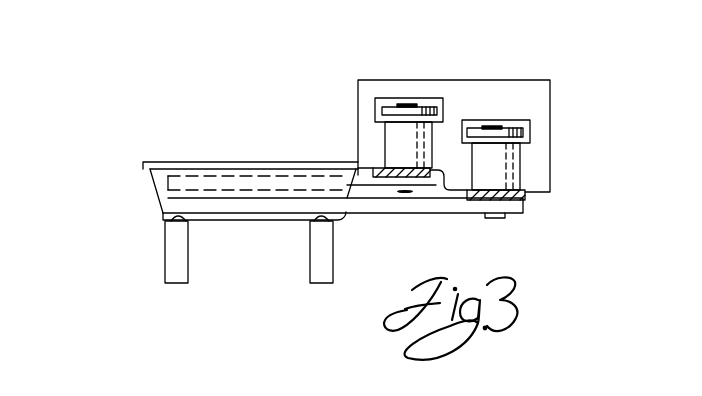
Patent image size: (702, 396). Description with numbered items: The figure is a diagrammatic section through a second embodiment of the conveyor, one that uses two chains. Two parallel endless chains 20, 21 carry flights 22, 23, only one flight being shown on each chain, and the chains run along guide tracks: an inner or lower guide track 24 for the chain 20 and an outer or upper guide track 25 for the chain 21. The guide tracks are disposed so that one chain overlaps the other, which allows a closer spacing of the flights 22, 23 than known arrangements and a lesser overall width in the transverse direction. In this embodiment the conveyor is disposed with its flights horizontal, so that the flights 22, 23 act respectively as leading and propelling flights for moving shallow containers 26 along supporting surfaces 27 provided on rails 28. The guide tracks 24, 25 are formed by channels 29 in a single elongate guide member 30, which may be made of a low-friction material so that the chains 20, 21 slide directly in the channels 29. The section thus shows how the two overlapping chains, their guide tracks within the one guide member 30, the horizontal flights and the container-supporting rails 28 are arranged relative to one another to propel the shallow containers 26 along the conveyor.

The endless chain 20 is at (512, 180).
The endless chain 21 is at (393, 140).
The flight 22 is at (182, 208).
The flight 23 is at (188, 178).
The inner guide track 24 is at (532, 103).
The outer guide track 25 is at (430, 88).
The shallow container 26 is at (153, 188).
The supporting surface 27 is at (178, 222).
The rail 28 is at (323, 278).
The channel 29 is at (432, 133).
The elongate guide member 30 is at (488, 98).